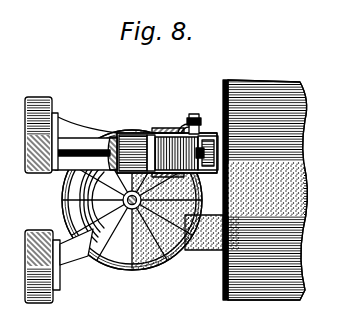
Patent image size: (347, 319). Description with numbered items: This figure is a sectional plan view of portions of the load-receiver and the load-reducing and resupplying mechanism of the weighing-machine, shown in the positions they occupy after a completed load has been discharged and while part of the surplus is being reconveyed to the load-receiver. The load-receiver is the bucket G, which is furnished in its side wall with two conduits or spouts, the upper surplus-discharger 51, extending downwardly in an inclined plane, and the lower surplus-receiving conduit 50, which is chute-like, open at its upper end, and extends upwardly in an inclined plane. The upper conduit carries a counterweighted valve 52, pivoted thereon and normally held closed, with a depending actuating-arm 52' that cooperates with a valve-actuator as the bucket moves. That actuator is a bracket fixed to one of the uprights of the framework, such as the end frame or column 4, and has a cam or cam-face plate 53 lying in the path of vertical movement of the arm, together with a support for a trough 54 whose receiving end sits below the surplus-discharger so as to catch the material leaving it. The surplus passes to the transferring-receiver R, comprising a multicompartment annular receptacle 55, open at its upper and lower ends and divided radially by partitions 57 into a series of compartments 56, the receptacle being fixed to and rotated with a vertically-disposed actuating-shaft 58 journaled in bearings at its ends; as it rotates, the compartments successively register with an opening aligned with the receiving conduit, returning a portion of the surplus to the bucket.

The end frame or column 4 is at (25, 170).
The surplus-receiving conduit 50 is at (213, 250).
The surplus-discharger conduit 51 is at (233, 118).
The counterweighted valve 52 is at (207, 126).
The depending actuating-arm 52' is at (188, 103).
The cam or cam-face plate 53 is at (184, 122).
The trough 54 is at (160, 143).
The multicompartment annular receptacle 55 is at (110, 258).
The compartments 56 is at (68, 222).
The partitions 57 is at (72, 191).
The actuating-shaft 58 is at (131, 262).
The bucket G is at (290, 96).
The transferring-receiver R is at (121, 213).